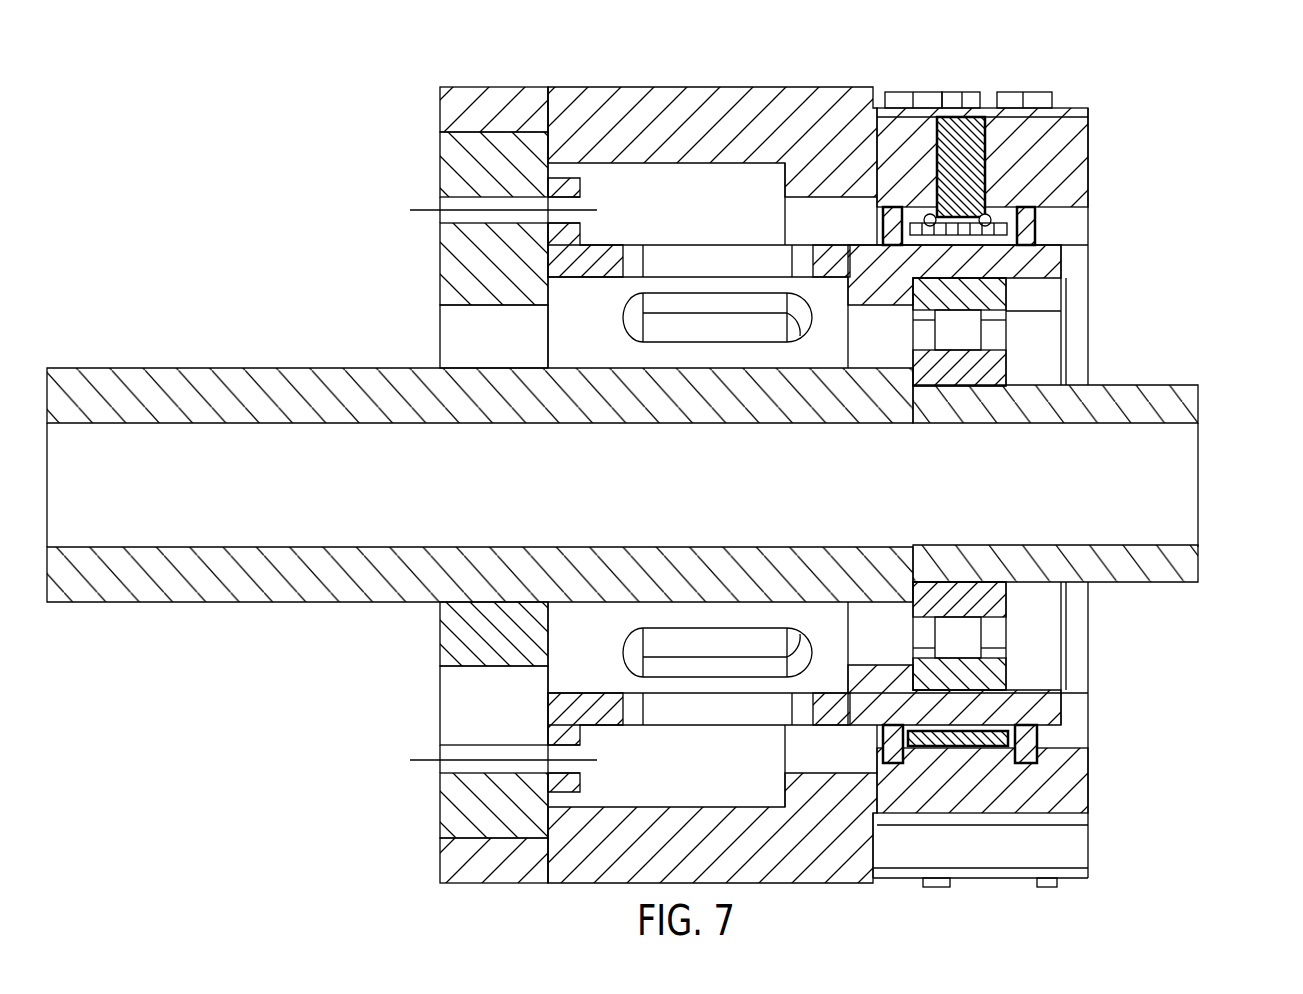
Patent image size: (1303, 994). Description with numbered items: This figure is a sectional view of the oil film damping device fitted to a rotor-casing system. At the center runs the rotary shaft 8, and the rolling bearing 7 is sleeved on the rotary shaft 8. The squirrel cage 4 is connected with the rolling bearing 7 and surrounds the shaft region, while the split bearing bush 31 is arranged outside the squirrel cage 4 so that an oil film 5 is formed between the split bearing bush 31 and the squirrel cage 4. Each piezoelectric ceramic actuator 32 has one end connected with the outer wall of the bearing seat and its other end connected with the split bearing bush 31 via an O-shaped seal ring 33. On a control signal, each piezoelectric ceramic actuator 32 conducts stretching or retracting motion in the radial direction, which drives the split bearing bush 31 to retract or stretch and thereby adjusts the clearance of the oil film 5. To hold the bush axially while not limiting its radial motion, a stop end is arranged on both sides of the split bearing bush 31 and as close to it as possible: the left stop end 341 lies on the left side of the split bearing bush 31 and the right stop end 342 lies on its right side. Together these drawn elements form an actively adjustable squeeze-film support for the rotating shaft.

The squirrel cage 4 is at (607, 243).
The left stop end 341 is at (873, 200).
The split bearing bush 31 is at (922, 230).
The piezoelectric ceramic actuator 32 is at (962, 192).
The O-shaped seal ring 33 is at (993, 222).
The right stop end 342 is at (1037, 218).
The oil film 5 is at (1012, 233).
The rolling bearing 7 is at (1061, 311).
The rotary shaft 8 is at (1080, 395).